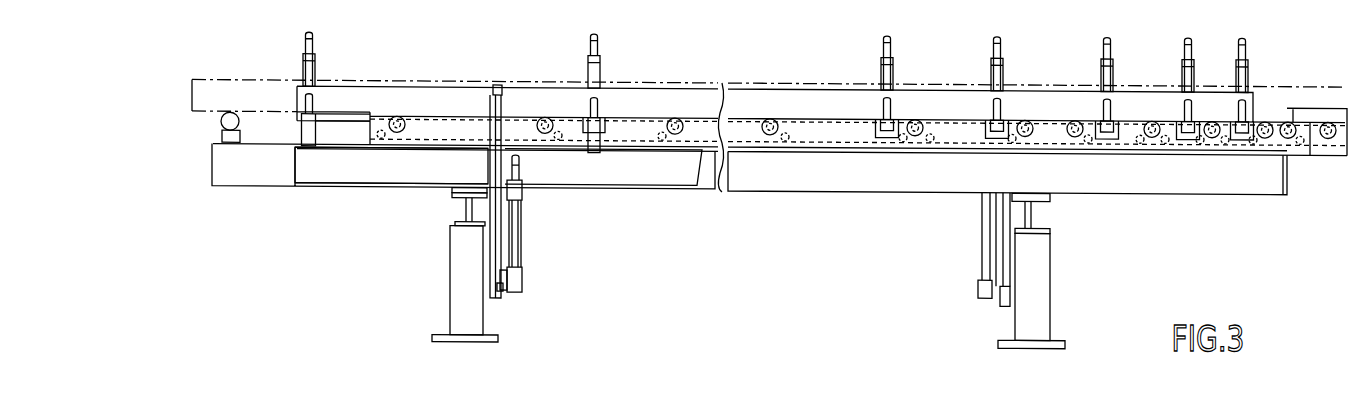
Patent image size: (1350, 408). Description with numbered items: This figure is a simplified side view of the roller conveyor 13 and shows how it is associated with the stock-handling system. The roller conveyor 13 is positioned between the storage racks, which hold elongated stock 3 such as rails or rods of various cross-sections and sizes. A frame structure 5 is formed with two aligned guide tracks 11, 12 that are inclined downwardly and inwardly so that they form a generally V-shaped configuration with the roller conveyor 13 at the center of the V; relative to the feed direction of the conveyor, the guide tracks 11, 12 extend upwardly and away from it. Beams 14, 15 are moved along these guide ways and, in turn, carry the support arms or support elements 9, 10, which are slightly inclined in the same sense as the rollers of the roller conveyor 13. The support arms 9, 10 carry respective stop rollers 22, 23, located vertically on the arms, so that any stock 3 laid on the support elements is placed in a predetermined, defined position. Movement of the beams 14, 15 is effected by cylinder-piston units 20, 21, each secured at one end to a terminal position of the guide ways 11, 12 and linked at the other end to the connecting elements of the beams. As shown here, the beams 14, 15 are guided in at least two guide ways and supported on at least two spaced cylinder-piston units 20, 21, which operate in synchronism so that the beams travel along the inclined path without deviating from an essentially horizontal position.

The elongated stock 3 is at (268, 92).
The frame structure 5 is at (470, 320).
The support arm 9 is at (1000, 112).
The support arm 10 is at (591, 56).
The guide track 11 is at (493, 210).
The guide track 12 is at (1005, 278).
The roller conveyor 13 is at (403, 118).
The beam 14 is at (397, 167).
The beam 15 is at (788, 100).
The cylinder-piston unit 20 is at (520, 232).
The cylinder-piston unit 21 is at (982, 248).
The stop roller 22 is at (890, 112).
The stop roller 23 is at (602, 42).